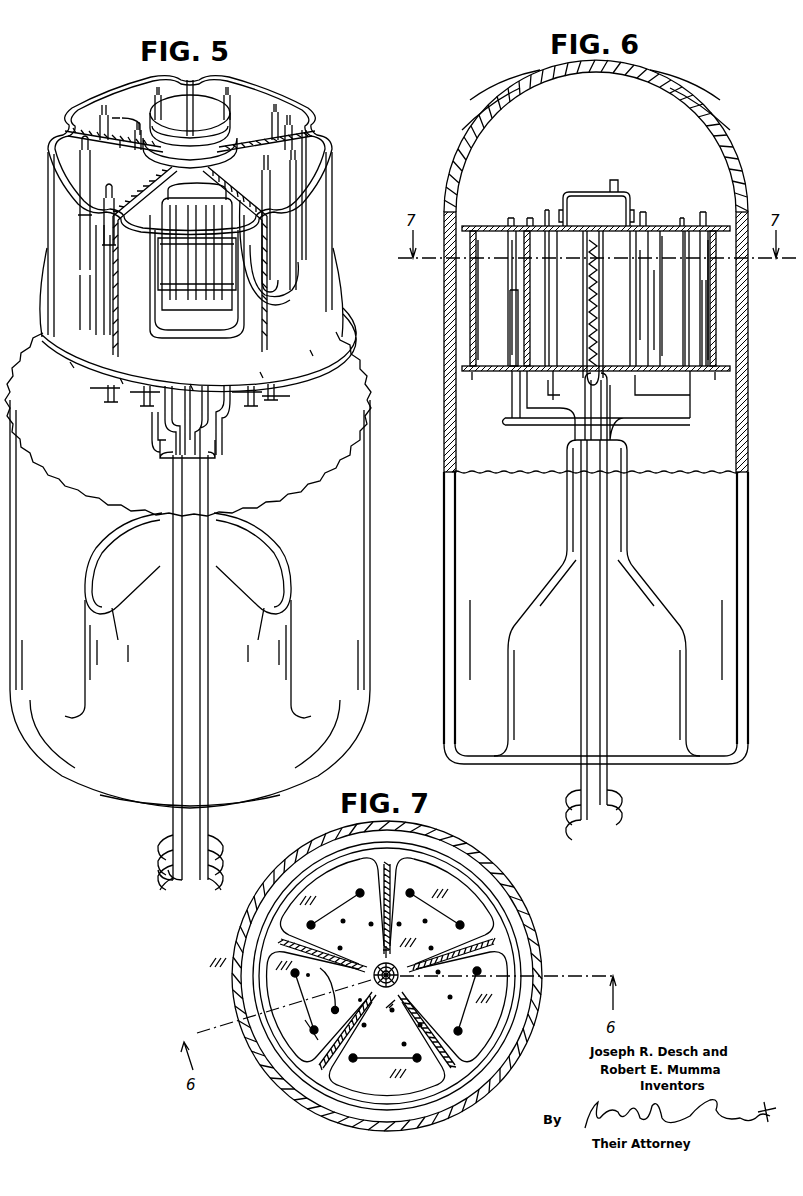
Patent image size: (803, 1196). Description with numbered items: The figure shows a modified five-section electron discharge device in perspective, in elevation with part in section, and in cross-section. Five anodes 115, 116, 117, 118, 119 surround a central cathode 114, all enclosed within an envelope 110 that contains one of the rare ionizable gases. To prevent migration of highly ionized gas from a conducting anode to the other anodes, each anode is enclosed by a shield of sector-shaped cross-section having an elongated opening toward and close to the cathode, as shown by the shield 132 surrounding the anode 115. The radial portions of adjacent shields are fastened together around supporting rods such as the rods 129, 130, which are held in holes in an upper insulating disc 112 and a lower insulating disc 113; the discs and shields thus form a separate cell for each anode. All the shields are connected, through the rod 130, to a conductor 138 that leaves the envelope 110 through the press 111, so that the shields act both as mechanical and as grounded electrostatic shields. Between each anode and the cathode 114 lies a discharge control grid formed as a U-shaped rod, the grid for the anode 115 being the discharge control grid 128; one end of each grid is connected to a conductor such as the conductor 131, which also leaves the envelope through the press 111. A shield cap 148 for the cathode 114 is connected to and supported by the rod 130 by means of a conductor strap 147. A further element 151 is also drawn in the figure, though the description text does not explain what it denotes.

In FIG. 5, the envelope 110 is at (188, 528).
In FIG. 6, the envelope 110 is at (444, 438).
In FIG. 7, the envelope 110 is at (518, 916).
In FIG. 5, the press 111 is at (214, 452).
In FIG. 5, the upper insulating disc 112 is at (140, 400).
In FIG. 6, the upper insulating disc 112 is at (482, 226).
In FIG. 5, the lower insulating disc 113 is at (333, 314).
In FIG. 6, the lower insulating disc 113 is at (470, 372).
In FIG. 5, the cathode 114 is at (197, 258).
In FIG. 6, the cathode 114 is at (593, 226).
In FIG. 7, the cathode 114 is at (400, 978).
In FIG. 5, the anode 115 is at (94, 222).
In FIG. 6, the anode 115 is at (510, 308).
In FIG. 7, the anode 115 is at (305, 988).
In FIG. 7, the anode 116 is at (328, 915).
In FIG. 7, the anode 117 is at (439, 909).
In FIG. 5, the anode 118 is at (300, 228).
In FIG. 7, the anode 118 is at (460, 1018).
In FIG. 5, the anode 119 is at (166, 290).
In FIG. 7, the anode 119 is at (380, 1058).
In FIG. 5, the discharge control grid 128 is at (124, 190).
In FIG. 6, the discharge control grid 128 is at (556, 214).
In FIG. 7, the discharge control grid 128 is at (323, 991).
In FIG. 5, the supporting rod 129 is at (143, 126).
In FIG. 7, the supporting rod 129 is at (382, 948).
In FIG. 5, the supporting rod 130 is at (197, 246).
In FIG. 7, the supporting rod 130 is at (370, 1004).
In FIG. 5, the conductor 131 is at (190, 419).
In FIG. 5, the shield 132 is at (66, 342).
In FIG. 6, the shield 132 is at (472, 246).
In FIG. 7, the shield 132 is at (322, 1046).
In FIG. 5, the conductor 138 is at (156, 420).
In FIG. 5, the conductor strap 147 is at (198, 128).
In FIG. 6, the conductor strap 147 is at (630, 200).
In FIG. 5, the shield cap 148 is at (162, 108).
In FIG. 6, the shield cap 148 is at (596, 192).
In FIG. 5, the lead wire 151 is at (100, 178).
In FIG. 6, the lead wire 151 is at (531, 292).
In FIG. 7, the lead wire 151 is at (328, 1028).